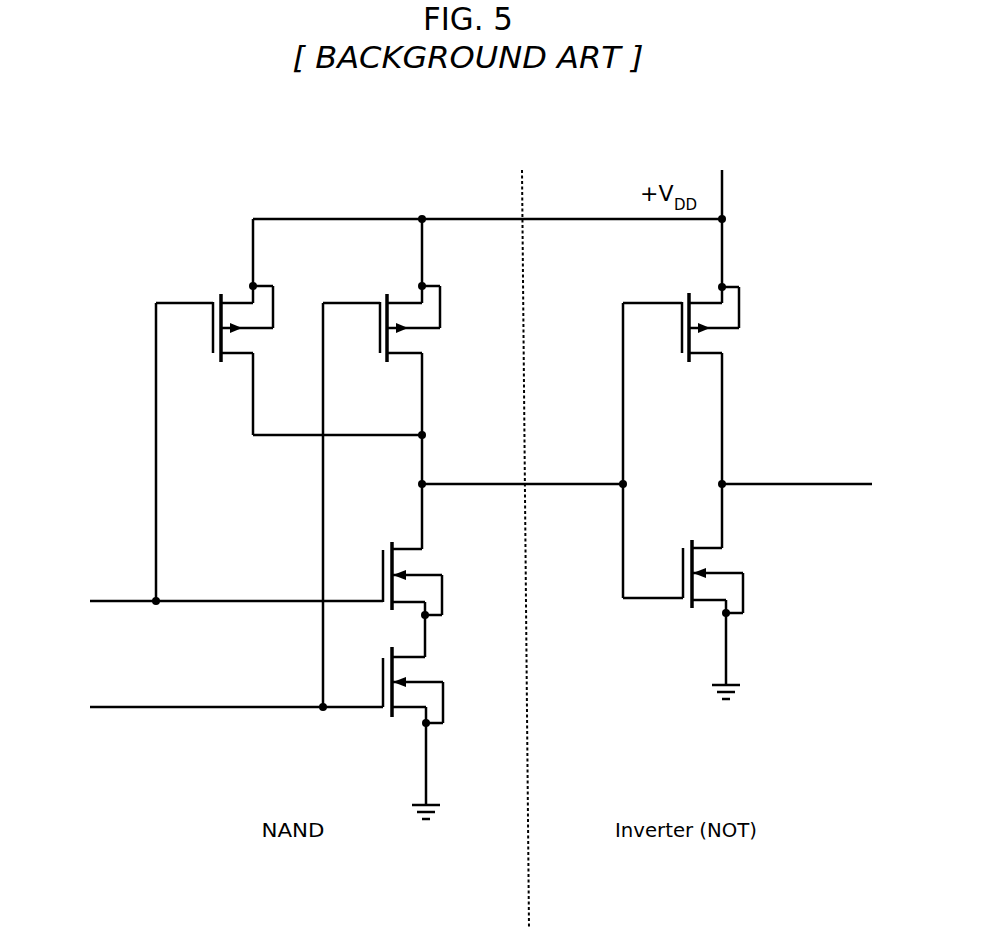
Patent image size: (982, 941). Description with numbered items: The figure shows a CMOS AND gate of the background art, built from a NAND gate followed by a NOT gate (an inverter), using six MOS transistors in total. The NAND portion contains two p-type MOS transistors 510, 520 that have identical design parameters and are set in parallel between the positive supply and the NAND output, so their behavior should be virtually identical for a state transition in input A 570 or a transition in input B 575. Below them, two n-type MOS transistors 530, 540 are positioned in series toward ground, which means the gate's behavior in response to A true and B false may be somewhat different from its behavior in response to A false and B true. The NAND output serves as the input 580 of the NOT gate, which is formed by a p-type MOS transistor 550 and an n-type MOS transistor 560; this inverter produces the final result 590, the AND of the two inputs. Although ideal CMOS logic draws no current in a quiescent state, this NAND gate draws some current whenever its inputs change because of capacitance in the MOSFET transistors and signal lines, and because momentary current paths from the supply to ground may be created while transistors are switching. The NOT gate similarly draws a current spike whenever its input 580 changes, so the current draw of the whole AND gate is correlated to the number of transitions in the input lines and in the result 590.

The p-type MOS transistor 510 is at (210, 287).
The p-type MOS transistor 520 is at (377, 287).
The n-type MOS transistor 530 is at (378, 533).
The n-type MOS transistor 540 is at (372, 657).
The p-type MOS transistor 550 is at (679, 287).
The n-type MOS transistor 560 is at (683, 532).
The input A 570 is at (69, 583).
The input B 575 is at (69, 688).
The input of the NOT gate 580 is at (498, 477).
The result 590 is at (848, 475).